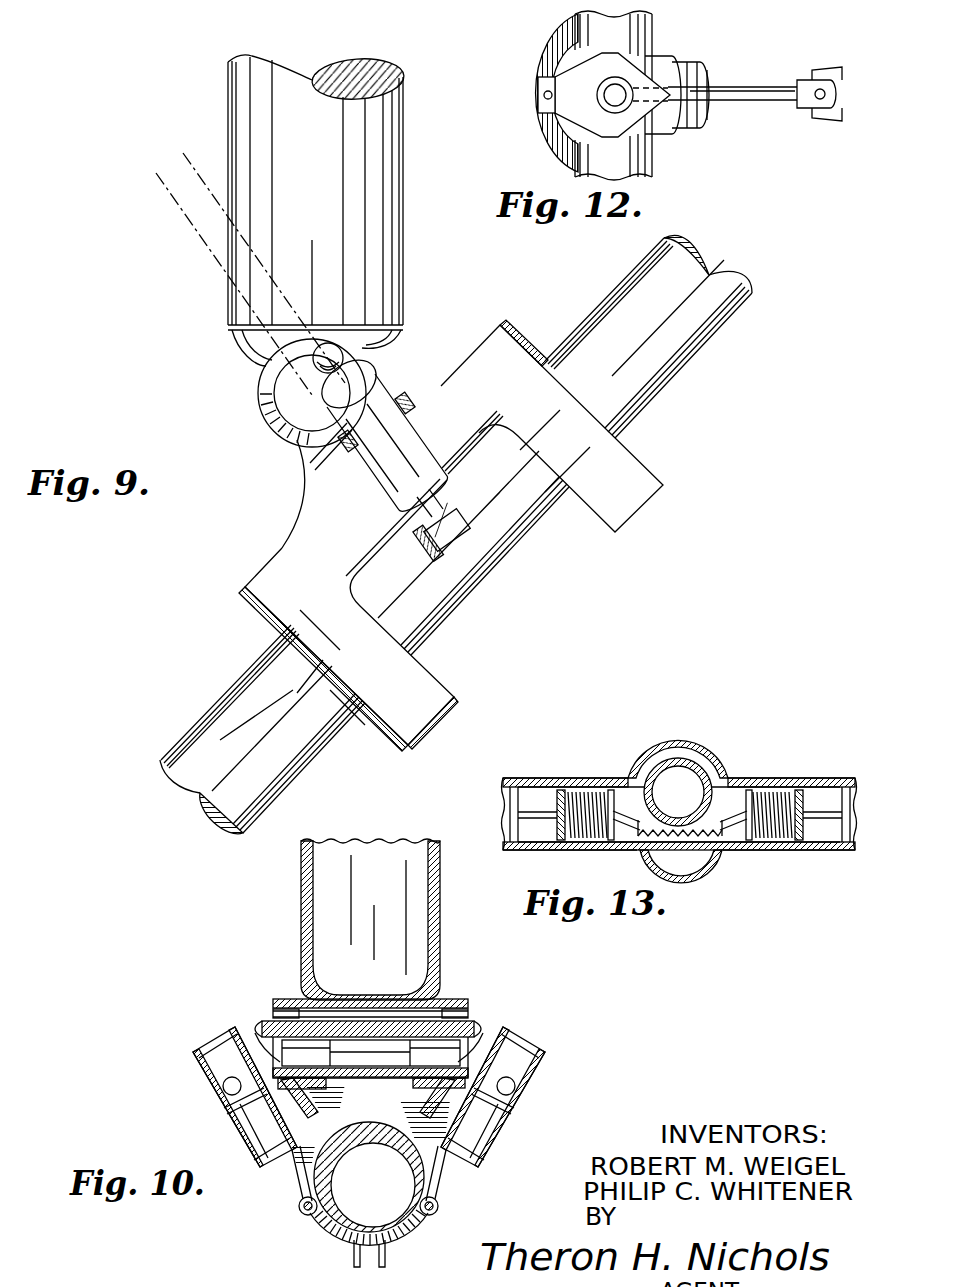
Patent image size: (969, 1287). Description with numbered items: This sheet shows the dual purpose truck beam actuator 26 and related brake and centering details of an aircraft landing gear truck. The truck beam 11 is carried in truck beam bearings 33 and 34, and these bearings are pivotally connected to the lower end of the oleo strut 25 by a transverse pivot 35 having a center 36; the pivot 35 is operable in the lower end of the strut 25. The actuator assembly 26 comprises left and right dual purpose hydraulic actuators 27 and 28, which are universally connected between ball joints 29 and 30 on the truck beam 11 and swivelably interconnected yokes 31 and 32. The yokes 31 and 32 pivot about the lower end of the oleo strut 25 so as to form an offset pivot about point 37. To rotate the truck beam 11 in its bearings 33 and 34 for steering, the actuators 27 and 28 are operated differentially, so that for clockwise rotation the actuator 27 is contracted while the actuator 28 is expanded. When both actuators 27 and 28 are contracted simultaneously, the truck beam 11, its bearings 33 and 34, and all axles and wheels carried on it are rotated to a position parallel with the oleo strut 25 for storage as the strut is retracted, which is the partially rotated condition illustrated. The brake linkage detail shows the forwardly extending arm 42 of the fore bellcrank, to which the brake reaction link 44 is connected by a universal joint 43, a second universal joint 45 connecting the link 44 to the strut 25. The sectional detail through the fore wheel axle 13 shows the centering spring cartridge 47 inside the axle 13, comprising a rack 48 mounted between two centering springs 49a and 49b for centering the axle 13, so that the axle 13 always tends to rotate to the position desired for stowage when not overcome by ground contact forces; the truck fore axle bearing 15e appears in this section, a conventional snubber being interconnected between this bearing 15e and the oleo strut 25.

In FIG. 9, the truck beam 11 is at (644, 362).
In FIG. 13, the truck beam 11 is at (704, 760).
In FIG. 12, the fore axle 13 is at (648, 58).
In FIG. 13, the fore axle 13 is at (760, 786).
In FIG. 13, the truck fore axle bearing 15e is at (662, 748).
In FIG. 9, the oleo strut 25 is at (326, 190).
In FIG. 10, the oleo strut 25 is at (386, 894).
In FIG. 9, the truck beam actuator 26 is at (362, 432).
In FIG. 10, the truck beam actuator 26 is at (389, 1119).
In FIG. 9, the left hydraulic actuator 27 is at (429, 487).
In FIG. 10, the left hydraulic actuator 27 is at (205, 1048).
In FIG. 10, the right hydraulic actuator 28 is at (540, 1047).
In FIG. 9, the ball joint 29 is at (462, 520).
In FIG. 10, the ball joint 29 is at (300, 1209).
In FIG. 10, the ball joint 30 is at (438, 1209).
In FIG. 9, the yoke 31 is at (355, 352).
In FIG. 10, the yoke 31 is at (262, 1022).
In FIG. 10, the yoke 32 is at (480, 1034).
In FIG. 9, the truck beam bearing 33 is at (354, 644).
In FIG. 10, the truck beam bearing 33 is at (400, 1243).
In FIG. 9, the truck beam bearing 34 is at (574, 444).
In FIG. 9, the transverse pivot 35 is at (294, 396).
In FIG. 10, the transverse pivot 35 is at (472, 1018).
In FIG. 9, the pivot center 36 is at (298, 405).
In FIG. 9, the offset pivot point 37 is at (300, 362).
In FIG. 12, the forwardly extending arm 42 is at (560, 30).
In FIG. 12, the universal joint 43 is at (592, 108).
In FIG. 12, the brake reaction link 44 is at (732, 88).
In FIG. 12, the second universal joint 45 is at (804, 80).
In FIG. 13, the centering spring cartridge 47 is at (740, 770).
In FIG. 13, the rack 48 is at (688, 840).
In FIG. 13, the centering spring 49a is at (588, 845).
In FIG. 13, the centering spring 49b is at (758, 845).